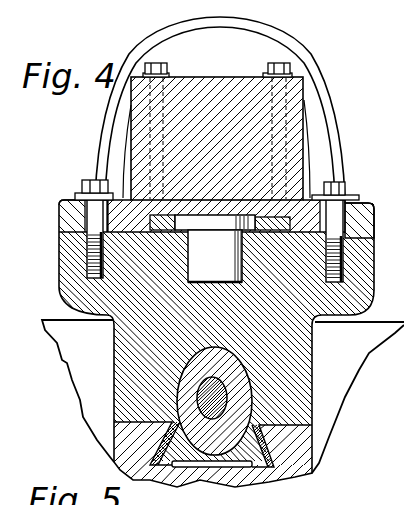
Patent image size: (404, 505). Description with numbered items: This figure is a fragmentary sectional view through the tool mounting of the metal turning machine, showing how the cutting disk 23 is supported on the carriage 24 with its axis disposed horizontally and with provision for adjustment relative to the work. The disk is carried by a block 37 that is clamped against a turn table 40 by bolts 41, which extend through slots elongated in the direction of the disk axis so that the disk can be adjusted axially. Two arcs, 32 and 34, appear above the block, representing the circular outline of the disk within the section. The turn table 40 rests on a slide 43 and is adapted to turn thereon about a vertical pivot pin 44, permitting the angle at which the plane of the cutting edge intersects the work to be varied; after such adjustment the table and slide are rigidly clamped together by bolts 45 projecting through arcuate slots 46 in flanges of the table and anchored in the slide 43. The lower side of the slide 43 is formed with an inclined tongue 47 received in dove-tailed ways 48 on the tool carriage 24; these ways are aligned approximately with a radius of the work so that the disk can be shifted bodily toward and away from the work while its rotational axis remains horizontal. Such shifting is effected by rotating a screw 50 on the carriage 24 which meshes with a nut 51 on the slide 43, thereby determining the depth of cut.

The cutting disk 23 is at (166, 37).
The carriage 24 is at (373, 337).
The rim 32 is at (287, 47).
The tire 34 is at (269, 31).
The block 37 is at (302, 92).
The turn table 40 is at (362, 204).
The bolts 41 is at (157, 63).
The slide 43 is at (75, 268).
The vertical pivot pin 44 is at (227, 288).
The bolts 45 is at (93, 180).
The arcuate slots 46 is at (346, 222).
The inclined tongue 47 is at (262, 459).
The dove-tailed ways 48 is at (128, 447).
The screw 50 is at (210, 390).
The nut 51 is at (201, 364).